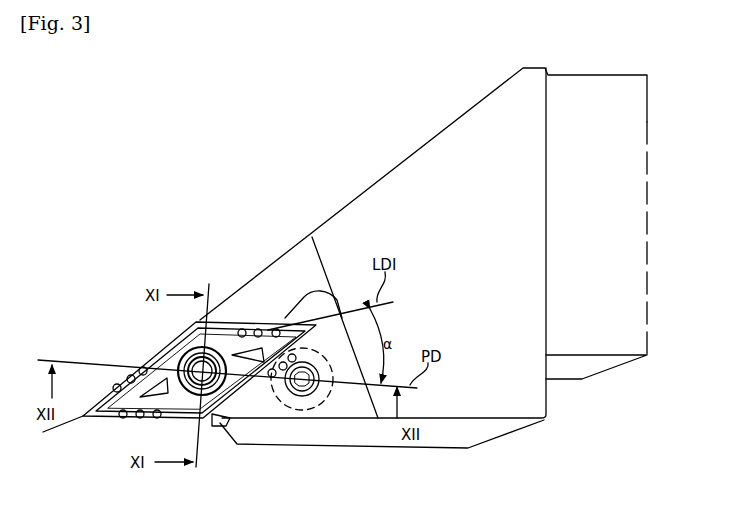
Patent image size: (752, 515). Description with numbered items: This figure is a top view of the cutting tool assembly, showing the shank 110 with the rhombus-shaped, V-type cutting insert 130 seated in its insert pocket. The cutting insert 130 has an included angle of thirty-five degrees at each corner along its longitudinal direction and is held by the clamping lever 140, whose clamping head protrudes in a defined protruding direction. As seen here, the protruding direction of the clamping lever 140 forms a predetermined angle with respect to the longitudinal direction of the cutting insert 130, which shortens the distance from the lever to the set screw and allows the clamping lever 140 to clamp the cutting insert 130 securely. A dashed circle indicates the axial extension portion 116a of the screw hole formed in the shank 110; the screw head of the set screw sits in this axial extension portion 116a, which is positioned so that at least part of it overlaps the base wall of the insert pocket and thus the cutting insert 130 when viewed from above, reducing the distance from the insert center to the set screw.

The shank 110 is at (358, 217).
The cutting insert 130 is at (125, 420).
The clamping lever 140 is at (214, 428).
The axial extension portion 116a is at (280, 410).